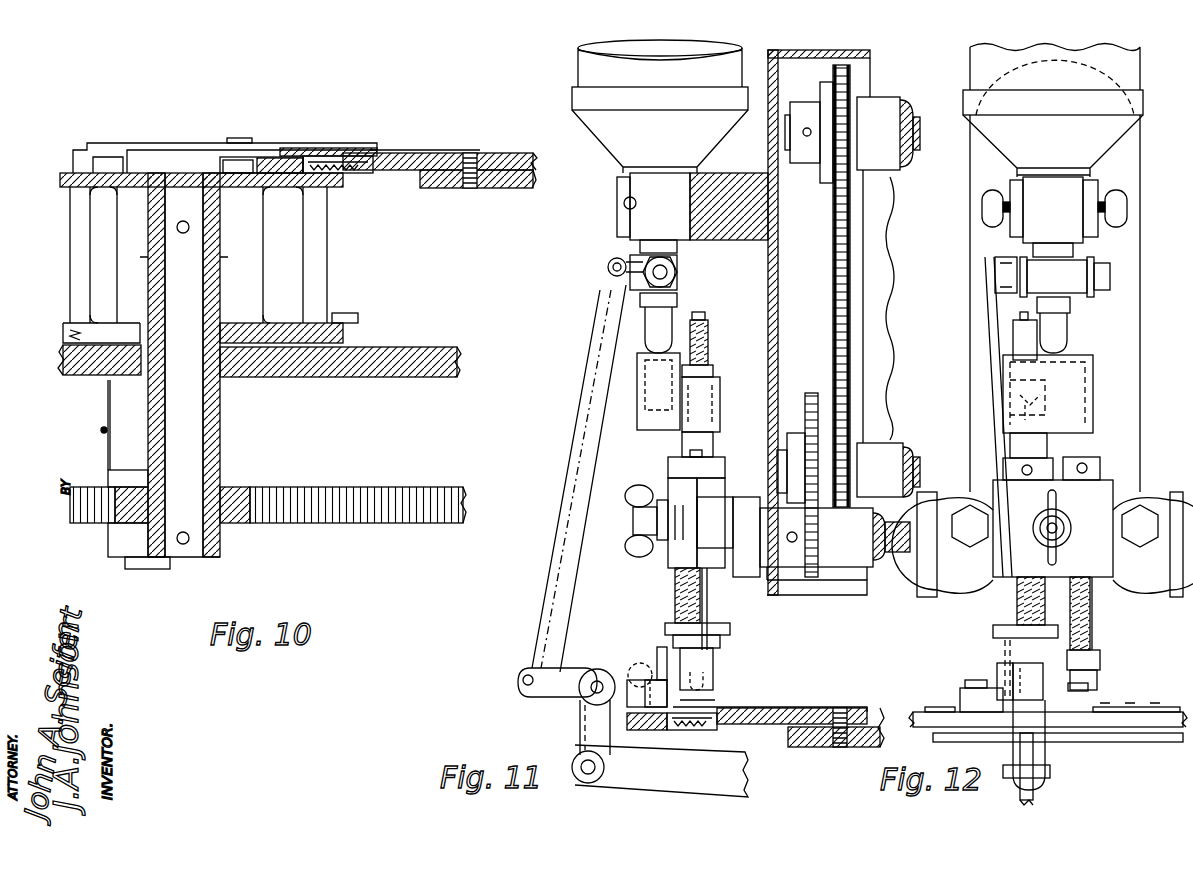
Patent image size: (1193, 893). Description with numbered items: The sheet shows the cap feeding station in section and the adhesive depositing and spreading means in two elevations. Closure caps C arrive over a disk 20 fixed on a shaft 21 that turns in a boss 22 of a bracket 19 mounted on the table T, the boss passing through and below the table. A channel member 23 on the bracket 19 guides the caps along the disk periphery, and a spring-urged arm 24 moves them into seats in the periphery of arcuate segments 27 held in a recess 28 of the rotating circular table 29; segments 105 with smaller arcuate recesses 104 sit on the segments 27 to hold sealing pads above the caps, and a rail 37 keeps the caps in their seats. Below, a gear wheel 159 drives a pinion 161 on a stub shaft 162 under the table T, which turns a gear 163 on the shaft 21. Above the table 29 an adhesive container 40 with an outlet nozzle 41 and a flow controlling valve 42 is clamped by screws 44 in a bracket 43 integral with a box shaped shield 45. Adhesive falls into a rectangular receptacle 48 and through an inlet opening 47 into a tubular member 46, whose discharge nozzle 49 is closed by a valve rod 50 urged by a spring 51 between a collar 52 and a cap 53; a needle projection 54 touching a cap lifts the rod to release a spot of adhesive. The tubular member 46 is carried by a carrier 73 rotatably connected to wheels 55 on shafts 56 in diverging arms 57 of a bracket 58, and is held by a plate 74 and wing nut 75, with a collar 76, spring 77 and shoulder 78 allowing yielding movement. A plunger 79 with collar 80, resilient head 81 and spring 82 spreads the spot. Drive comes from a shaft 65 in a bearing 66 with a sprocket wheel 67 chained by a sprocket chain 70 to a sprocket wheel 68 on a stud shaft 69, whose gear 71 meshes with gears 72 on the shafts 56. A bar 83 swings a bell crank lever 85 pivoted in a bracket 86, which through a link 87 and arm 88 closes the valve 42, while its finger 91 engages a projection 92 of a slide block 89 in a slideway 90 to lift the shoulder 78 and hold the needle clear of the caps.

In FIG. 10, the bracket 19 is at (320, 242).
In FIG. 10, the disk 20 is at (336, 190).
In FIG. 10, the shaft 21 is at (188, 546).
In FIG. 10, the boss 22 is at (222, 421).
In FIG. 10, the channel member 23 is at (115, 143).
In FIG. 10, the arm 24 is at (262, 157).
In FIG. 10, the arcuate segments 27 is at (396, 171).
In FIG. 11, the arcuate segments 27 is at (765, 724).
In FIG. 10, the recess 28 is at (445, 189).
In FIG. 11, the recess 28 is at (808, 748).
In FIG. 10, the circular table 29 is at (528, 189).
In FIG. 11, the circular table 29 is at (855, 748).
In FIG. 12, the circular table 29 is at (1135, 743).
In FIG. 11, the rail 37 is at (660, 730).
In FIG. 12, the rail 37 is at (915, 718).
In FIG. 11, the container 40 is at (580, 72).
In FIG. 12, the container 40 is at (985, 62).
In FIG. 11, the discharge outlet nozzle portion 41 is at (672, 303).
In FIG. 12, the discharge outlet nozzle portion 41 is at (1067, 310).
In FIG. 11, the flow controlling valve 42 is at (668, 272).
In FIG. 12, the flow controlling valve 42 is at (1112, 278).
In FIG. 11, the bracket 43 is at (722, 188).
In FIG. 12, the bracket 43 is at (1092, 232).
In FIG. 11, the clamping screws 44 is at (623, 203).
In FIG. 12, the clamping screws 44 is at (992, 190).
In FIG. 11, the shield 45 is at (767, 287).
In FIG. 12, the shield 45 is at (970, 244).
In FIG. 11, the tubular member 46 is at (682, 447).
In FIG. 12, the tubular member 46 is at (1048, 448).
In FIG. 11, the inlet opening 47 is at (722, 408).
In FIG. 12, the inlet opening 47 is at (1005, 416).
In FIG. 11, the rectangular receptacle 48 is at (640, 413).
In FIG. 12, the rectangular receptacle 48 is at (1093, 396).
In FIG. 11, the discharge nozzle 49 is at (714, 670).
In FIG. 11, the valve rod 50 is at (706, 318).
In FIG. 12, the valve rod 50 is at (1021, 318).
In FIG. 11, the spring 51 is at (708, 332).
In FIG. 11, the collar 52 is at (713, 369).
In FIG. 11, the cap 53 is at (710, 350).
In FIG. 12, the cap 53 is at (1015, 335).
In FIG. 11, the needle projection 54 is at (713, 702).
In FIG. 11, the wheels 55 is at (746, 557).
In FIG. 12, the wheels 55 is at (975, 578).
In FIG. 11, the shafts 56 is at (890, 561).
In FIG. 11, the diverging arms 57 is at (858, 578).
In FIG. 11, the bracket 58 is at (892, 397).
In FIG. 11, the shaft 65 is at (918, 150).
In FIG. 11, the bearing 66 is at (890, 172).
In FIG. 11, the sprocket wheel 67 is at (851, 80).
In FIG. 11, the sprocket wheel 68 is at (851, 432).
In FIG. 11, the stud shaft 69 is at (915, 470).
In FIG. 11, the sprocket chain 70 is at (851, 357).
In FIG. 11, the gear 71 is at (810, 393).
In FIG. 11, the gears 72 is at (806, 578).
In FIG. 11, the carrier 73 is at (725, 492).
In FIG. 12, the carrier 73 is at (1118, 500).
In FIG. 11, the plate 74 is at (676, 560).
In FIG. 12, the plate 74 is at (1089, 613).
In FIG. 11, the wing nut 75 is at (632, 497).
In FIG. 12, the wing nut 75 is at (1058, 538).
In FIG. 11, the collar 76 is at (668, 467).
In FIG. 12, the collar 76 is at (1035, 480).
In FIG. 11, the spring 77 is at (676, 598).
In FIG. 12, the spring 77 is at (1039, 601).
In FIG. 11, the shoulder 78 is at (730, 630).
In FIG. 12, the shoulder 78 is at (993, 630).
In FIG. 11, the plunger 79 is at (720, 646).
In FIG. 12, the plunger 79 is at (1093, 630).
In FIG. 11, the collar 80 is at (705, 470).
In FIG. 12, the collar 80 is at (1095, 467).
In FIG. 11, the head 81 is at (716, 700).
In FIG. 12, the head 81 is at (1097, 679).
In FIG. 11, the spring 82 is at (708, 598).
In FIG. 12, the spring 82 is at (1100, 656).
In FIG. 11, the bar 83 is at (678, 797).
In FIG. 12, the bar 83 is at (1034, 800).
In FIG. 11, the bell crank lever 85 is at (560, 668).
In FIG. 12, the bell crank lever 85 is at (1046, 760).
In FIG. 11, the bracket 86 is at (590, 690).
In FIG. 12, the bracket 86 is at (965, 698).
In FIG. 11, the link 87 is at (556, 483).
In FIG. 12, the link 87 is at (988, 370).
In FIG. 11, the arm 88 is at (612, 260).
In FIG. 12, the arm 88 is at (1003, 258).
In FIG. 11, the slide block 89 is at (660, 660).
In FIG. 12, the slide block 89 is at (1038, 670).
In FIG. 11, the slideway 90 is at (663, 693).
In FIG. 12, the slideway 90 is at (997, 670).
In FIG. 11, the finger 91 is at (628, 680).
In FIG. 11, the projection 92 is at (636, 655).
In FIG. 10, the arcuate recesses 104 is at (332, 150).
In FIG. 12, the arcuate recesses 104 is at (1155, 707).
In FIG. 10, the arcuate segments 105 is at (418, 150).
In FIG. 11, the arcuate segments 105 is at (800, 707).
In FIG. 10, the gear wheel 159 is at (390, 524).
In FIG. 10, the pinion 161 is at (92, 524).
In FIG. 10, the stub shaft 162 is at (153, 571).
In FIG. 10, the gear 163 is at (272, 524).
In FIG. 10, the closure caps C is at (343, 172).
In FIG. 11, the closure caps C is at (692, 731).
In FIG. 10, the table T is at (441, 348).